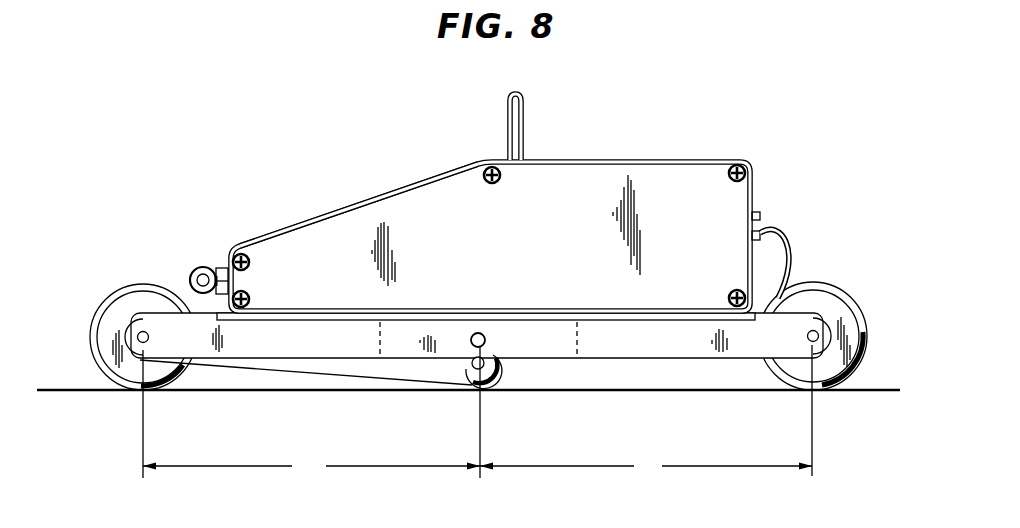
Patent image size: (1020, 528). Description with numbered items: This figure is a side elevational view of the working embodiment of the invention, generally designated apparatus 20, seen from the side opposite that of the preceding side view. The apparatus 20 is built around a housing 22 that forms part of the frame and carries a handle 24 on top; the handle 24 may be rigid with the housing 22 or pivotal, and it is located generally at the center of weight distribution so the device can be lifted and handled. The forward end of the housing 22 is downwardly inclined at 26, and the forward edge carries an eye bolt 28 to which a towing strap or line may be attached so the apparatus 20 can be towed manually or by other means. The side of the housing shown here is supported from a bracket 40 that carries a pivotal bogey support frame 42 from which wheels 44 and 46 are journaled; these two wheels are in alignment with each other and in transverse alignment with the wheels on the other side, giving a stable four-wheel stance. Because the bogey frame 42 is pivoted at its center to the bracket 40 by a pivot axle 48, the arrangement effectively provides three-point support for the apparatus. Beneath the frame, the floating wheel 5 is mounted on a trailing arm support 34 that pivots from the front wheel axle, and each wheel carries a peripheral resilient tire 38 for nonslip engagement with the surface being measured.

The apparatus 20 is at (646, 141).
The housing 22 is at (570, 173).
The handle 24 is at (511, 117).
The downwardly inclined forward end 26 is at (347, 207).
The eye bolt 28 is at (200, 267).
The trailing arm support 34 is at (388, 368).
The peripheral resilient tire 38 is at (118, 286).
The bracket 40 is at (538, 332).
The bogey support frame 42 is at (289, 347).
The wheel 44 is at (828, 302).
The wheel 46 is at (110, 335).
The pivot axle 48 is at (473, 333).
The floating wheel 5 is at (505, 377).